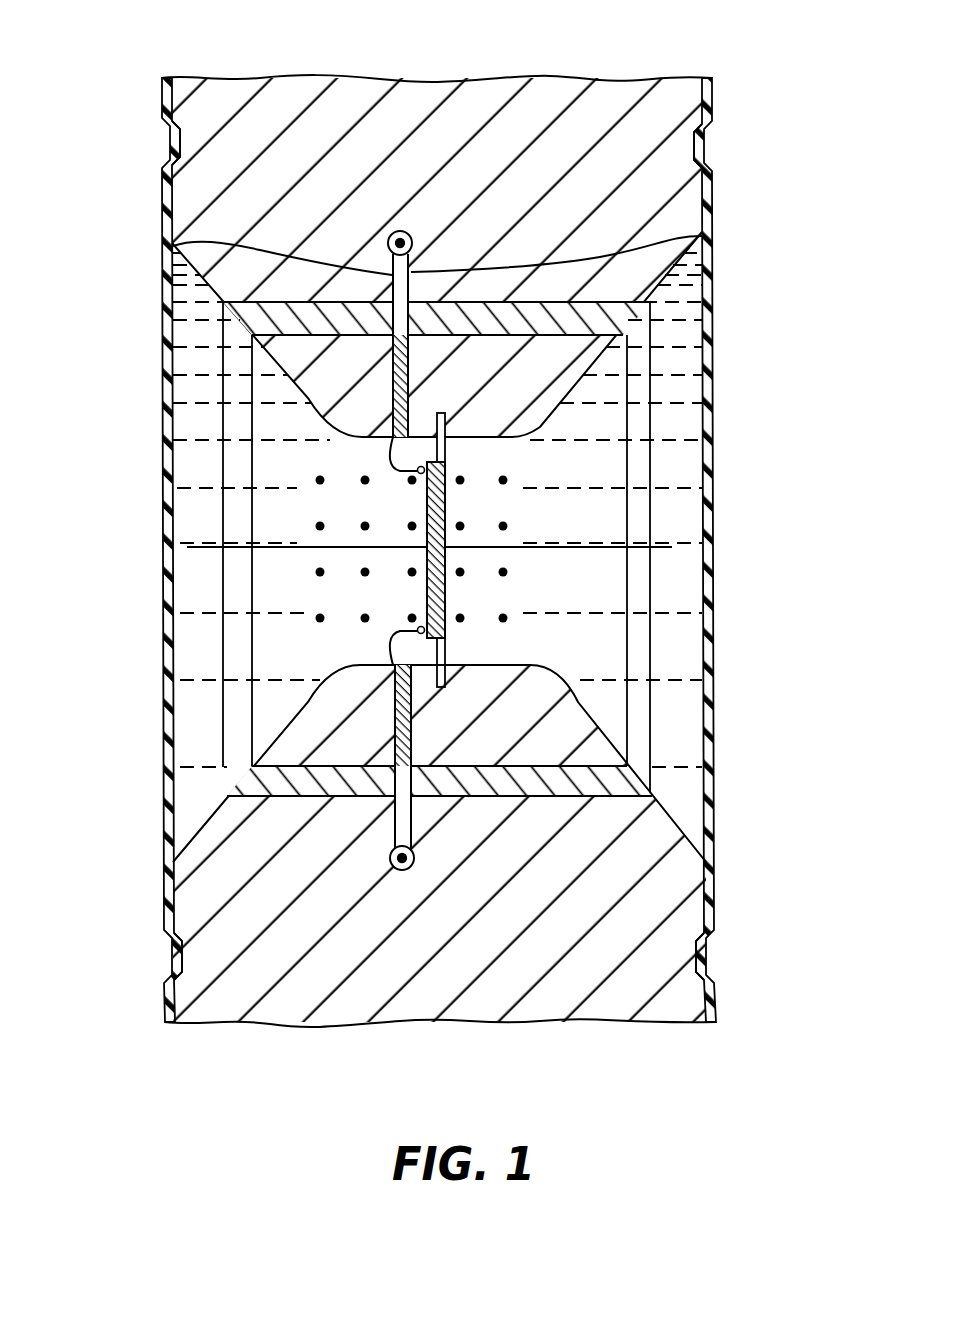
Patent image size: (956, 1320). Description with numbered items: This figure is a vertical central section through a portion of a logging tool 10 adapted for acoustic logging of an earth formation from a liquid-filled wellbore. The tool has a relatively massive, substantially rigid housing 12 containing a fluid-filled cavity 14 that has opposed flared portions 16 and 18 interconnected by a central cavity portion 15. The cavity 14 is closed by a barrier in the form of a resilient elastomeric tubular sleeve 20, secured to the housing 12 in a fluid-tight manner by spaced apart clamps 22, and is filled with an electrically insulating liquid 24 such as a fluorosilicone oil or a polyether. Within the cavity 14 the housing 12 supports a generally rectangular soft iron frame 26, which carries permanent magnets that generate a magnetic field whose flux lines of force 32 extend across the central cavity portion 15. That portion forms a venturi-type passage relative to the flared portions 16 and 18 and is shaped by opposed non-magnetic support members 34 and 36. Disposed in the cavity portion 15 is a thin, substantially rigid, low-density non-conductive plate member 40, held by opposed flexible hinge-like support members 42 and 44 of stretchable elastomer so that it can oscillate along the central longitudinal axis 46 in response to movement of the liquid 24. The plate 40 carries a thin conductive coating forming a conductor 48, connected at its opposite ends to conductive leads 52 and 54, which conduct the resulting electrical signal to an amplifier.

The logging tool 10 is at (641, 68).
The housing 12 is at (445, 78).
The fluid-filled cavity 14 is at (594, 478).
The central cavity portion 15 is at (398, 519).
The flared portion 16 is at (670, 336).
The flared portion 18 is at (204, 362).
The resilient elastomeric tubular sleeve 20 is at (716, 753).
The clamps 22 is at (713, 147).
The electrically insulating liquid 24 is at (665, 487).
The soft iron frame 26 is at (620, 297).
The magnetic flux lines of force 32 is at (365, 574).
The non-magnetic support member 34 is at (455, 342).
The non-magnetic support member 36 is at (489, 742).
The plate member 40 is at (446, 598).
The flexible hinge-like support member 42 is at (537, 700).
The flexible hinge-like support member 44 is at (447, 450).
The central longitudinal axis 46 is at (238, 546).
The conductor 48 is at (426, 600).
The conductive lead 52 is at (167, 253).
The conductive lead 54 is at (402, 834).